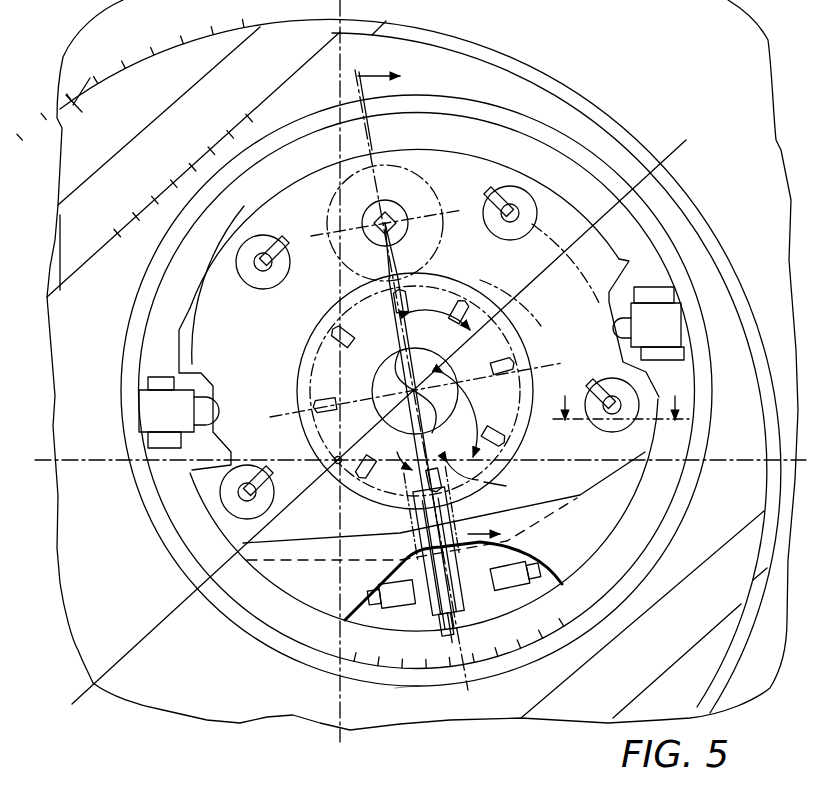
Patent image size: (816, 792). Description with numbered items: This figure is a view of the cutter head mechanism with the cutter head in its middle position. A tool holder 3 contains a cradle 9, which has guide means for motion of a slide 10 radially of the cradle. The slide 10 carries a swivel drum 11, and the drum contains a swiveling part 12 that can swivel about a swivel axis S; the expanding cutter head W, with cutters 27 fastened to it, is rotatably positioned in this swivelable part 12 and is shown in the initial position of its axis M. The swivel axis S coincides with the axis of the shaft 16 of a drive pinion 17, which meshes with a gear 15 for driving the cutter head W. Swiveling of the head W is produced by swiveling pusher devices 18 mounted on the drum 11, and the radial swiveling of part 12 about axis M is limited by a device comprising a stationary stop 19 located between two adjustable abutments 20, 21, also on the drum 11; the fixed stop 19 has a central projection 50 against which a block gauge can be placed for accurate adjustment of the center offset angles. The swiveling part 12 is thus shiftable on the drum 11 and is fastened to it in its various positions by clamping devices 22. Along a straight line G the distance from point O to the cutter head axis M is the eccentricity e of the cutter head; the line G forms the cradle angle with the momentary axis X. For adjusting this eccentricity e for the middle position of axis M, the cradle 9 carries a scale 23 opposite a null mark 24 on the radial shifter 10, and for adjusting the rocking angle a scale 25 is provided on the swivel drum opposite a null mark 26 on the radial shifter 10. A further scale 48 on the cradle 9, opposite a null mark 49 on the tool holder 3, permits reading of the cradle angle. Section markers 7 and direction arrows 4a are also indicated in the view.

The tool holder 3 is at (80, 45).
The cradle 9 is at (72, 168).
The slide 10 is at (486, 72).
The swivel drum 11 is at (485, 142).
The swiveling part 12 is at (552, 228).
The gear 15 is at (514, 326).
The shaft 16 is at (398, 178).
The drive pinion 17 is at (440, 262).
The swiveling pusher devices 18 is at (137, 410).
The stationary stop 19 is at (440, 600).
The adjustable abutment 20 is at (398, 608).
The adjustable abutment 21 is at (532, 566).
The clamping devices 22 is at (250, 272).
The scale 23 is at (72, 278).
The null mark 24 is at (214, 156).
The scale 25 is at (452, 668).
The null mark 26 is at (396, 680).
The cutters 27 is at (340, 466).
The scale 48 is at (80, 104).
The null mark 49 is at (76, 98).
The central projection 50 is at (472, 606).
The section line 7- 7 is at (621, 396).
The direction arrow 4a is at (441, 304).
The cutter head W is at (522, 420).
The momentary axis X is at (720, 468).
The straight line G is at (576, 256).
The swivel axis S is at (390, 216).
The cutter head axis M is at (380, 344).
The eccentricity e is at (364, 404).
The center point O is at (336, 466).